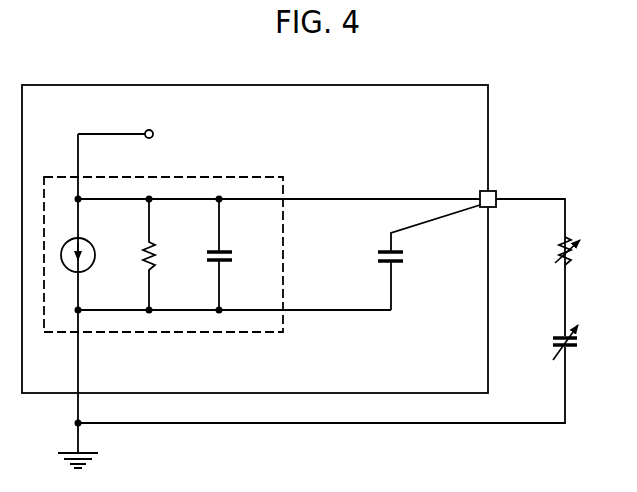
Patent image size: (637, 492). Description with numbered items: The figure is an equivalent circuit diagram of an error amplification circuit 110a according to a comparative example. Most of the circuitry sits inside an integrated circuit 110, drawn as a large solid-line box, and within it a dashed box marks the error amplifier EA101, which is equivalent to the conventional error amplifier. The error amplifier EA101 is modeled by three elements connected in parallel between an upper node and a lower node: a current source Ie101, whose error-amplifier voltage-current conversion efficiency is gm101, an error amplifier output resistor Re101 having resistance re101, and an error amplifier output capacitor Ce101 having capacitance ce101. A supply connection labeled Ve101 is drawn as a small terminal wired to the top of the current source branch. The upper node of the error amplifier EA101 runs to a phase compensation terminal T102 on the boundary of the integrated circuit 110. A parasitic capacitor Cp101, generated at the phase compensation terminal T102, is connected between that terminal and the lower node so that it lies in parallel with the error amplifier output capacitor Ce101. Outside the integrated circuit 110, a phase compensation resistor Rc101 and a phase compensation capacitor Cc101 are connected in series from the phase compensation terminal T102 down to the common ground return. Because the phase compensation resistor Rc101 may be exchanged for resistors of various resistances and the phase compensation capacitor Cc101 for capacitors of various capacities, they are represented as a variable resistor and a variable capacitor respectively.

The integrated circuit 110 is at (97, 85).
The error amplification circuit 110a is at (454, 66).
The supply voltage terminal Ve101 is at (153, 130).
The error amplifier EA101 is at (246, 163).
The current source Ie101 is at (94, 266).
The error amplifier output resistor Re101 is at (152, 262).
The error amplifier output capacitor Ce101 is at (229, 262).
The phase compensation terminal T102 is at (498, 197).
The parasitic capacitor Cp101 is at (400, 263).
The phase compensation resistor Rc101 is at (573, 265).
The phase compensation capacitor Cc101 is at (574, 350).